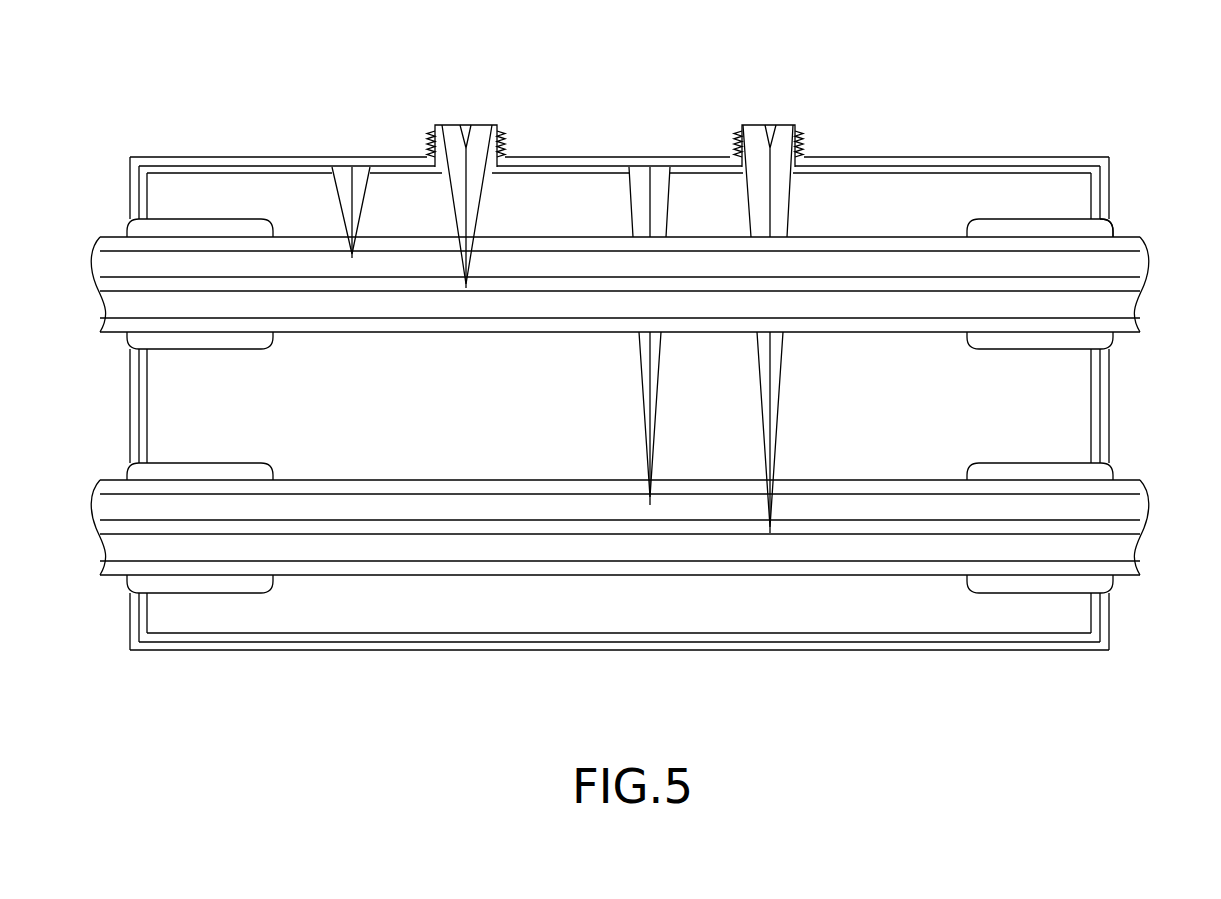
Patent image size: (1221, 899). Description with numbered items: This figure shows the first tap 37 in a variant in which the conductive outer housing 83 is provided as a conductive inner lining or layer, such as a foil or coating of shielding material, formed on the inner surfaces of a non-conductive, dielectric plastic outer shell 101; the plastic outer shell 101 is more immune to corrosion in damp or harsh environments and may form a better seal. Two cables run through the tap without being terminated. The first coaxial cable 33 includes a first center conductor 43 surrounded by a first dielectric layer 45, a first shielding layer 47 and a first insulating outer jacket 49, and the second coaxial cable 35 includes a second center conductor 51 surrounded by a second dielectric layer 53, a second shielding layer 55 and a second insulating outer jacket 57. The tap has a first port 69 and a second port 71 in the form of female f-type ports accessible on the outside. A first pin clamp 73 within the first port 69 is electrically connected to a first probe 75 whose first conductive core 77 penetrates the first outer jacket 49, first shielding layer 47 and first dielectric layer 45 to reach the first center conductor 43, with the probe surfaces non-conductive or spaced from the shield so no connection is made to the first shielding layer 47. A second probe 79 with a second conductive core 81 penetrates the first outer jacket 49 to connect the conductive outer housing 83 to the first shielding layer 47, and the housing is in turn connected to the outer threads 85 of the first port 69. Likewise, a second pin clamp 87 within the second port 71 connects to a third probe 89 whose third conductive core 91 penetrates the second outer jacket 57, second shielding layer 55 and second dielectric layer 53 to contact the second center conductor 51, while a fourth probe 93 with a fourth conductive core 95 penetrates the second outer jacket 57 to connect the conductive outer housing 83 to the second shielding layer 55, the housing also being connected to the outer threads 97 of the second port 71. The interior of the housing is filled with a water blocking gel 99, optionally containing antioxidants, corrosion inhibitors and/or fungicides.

The first coaxial cable 33 is at (97, 555).
The second coaxial cable 35 is at (97, 314).
The first tap 37 is at (1010, 142).
The first center conductor 43 is at (1133, 528).
The first dielectric layer 45 is at (1133, 507).
The first shielding layer 47 is at (1142, 482).
The first insulating outer jacket 49 is at (1135, 567).
The second center conductor 51 is at (1132, 283).
The second dielectric layer 53 is at (1135, 262).
The second shielding layer 55 is at (1135, 240).
The second insulating outer jacket 57 is at (1122, 237).
The first port 69 is at (784, 280).
The second port 71 is at (489, 157).
The first pin clamp 73 is at (771, 138).
The first probe 75 is at (782, 363).
The first conductive core 77 is at (770, 390).
The second probe 79 is at (658, 360).
The second conductive core 81 is at (650, 390).
The conductive outer housing 83 is at (678, 166).
The outer threads 85 is at (805, 147).
The second pin clamp 87 is at (460, 136).
The third probe 89 is at (484, 187).
The third conductive core 91 is at (468, 212).
The fourth probe 93 is at (369, 188).
The fourth conductive core 95 is at (353, 215).
The outer threads 97 is at (503, 143).
The water blocking gel 99 is at (928, 216).
The plastic outer shell 101 is at (930, 158).